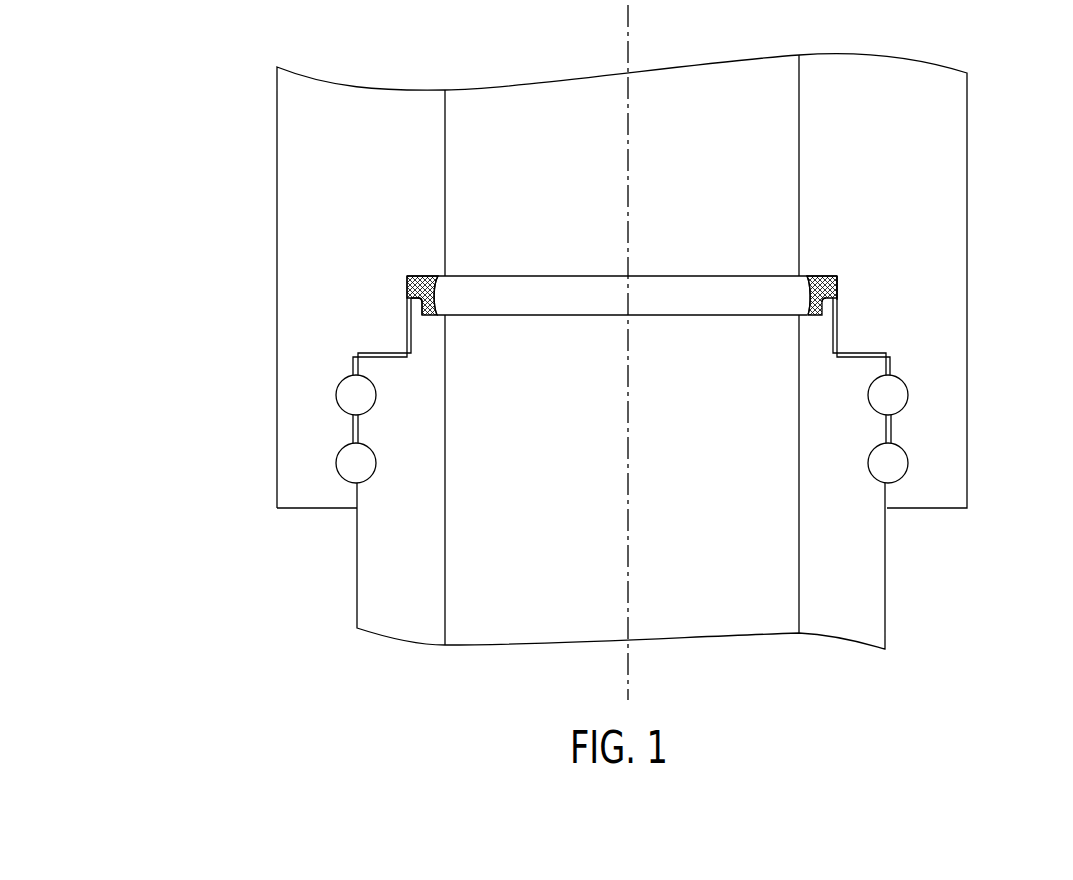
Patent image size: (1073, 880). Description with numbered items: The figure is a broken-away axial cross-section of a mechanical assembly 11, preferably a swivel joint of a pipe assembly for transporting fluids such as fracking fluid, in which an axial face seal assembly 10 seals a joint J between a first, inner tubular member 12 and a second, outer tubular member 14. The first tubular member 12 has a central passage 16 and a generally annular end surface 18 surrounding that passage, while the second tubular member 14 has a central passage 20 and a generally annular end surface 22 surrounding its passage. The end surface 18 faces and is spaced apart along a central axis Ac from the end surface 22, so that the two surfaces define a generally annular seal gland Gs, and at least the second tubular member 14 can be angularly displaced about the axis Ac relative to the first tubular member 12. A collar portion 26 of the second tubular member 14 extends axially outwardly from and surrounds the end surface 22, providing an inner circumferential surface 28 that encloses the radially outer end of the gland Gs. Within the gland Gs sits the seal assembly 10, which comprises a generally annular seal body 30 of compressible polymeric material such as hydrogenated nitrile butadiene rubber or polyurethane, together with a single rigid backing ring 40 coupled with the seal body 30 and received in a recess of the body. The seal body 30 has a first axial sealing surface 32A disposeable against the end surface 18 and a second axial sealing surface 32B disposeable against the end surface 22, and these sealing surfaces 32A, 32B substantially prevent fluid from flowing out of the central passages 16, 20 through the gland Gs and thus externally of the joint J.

The axial face seal assembly 10 is at (622, 281).
The mechanical assembly 11 is at (229, 378).
The first tubular member 12 is at (358, 606).
The second tubular member 14 is at (270, 211).
The central passage 16 is at (445, 617).
The end surface 18 is at (721, 314).
The central passage 20 is at (445, 130).
The end surface 22 is at (686, 277).
The collar portion 26 is at (948, 311).
The inner circumferential surface 28 is at (410, 310).
The seal body 30 is at (808, 293).
The first axial sealing surface 32A is at (813, 318).
The second axial sealing surface 32B is at (431, 276).
The backing ring 40 is at (425, 318).
The seal gland Gs is at (441, 296).
The joint J is at (886, 288).
The central axis Ac is at (631, 38).